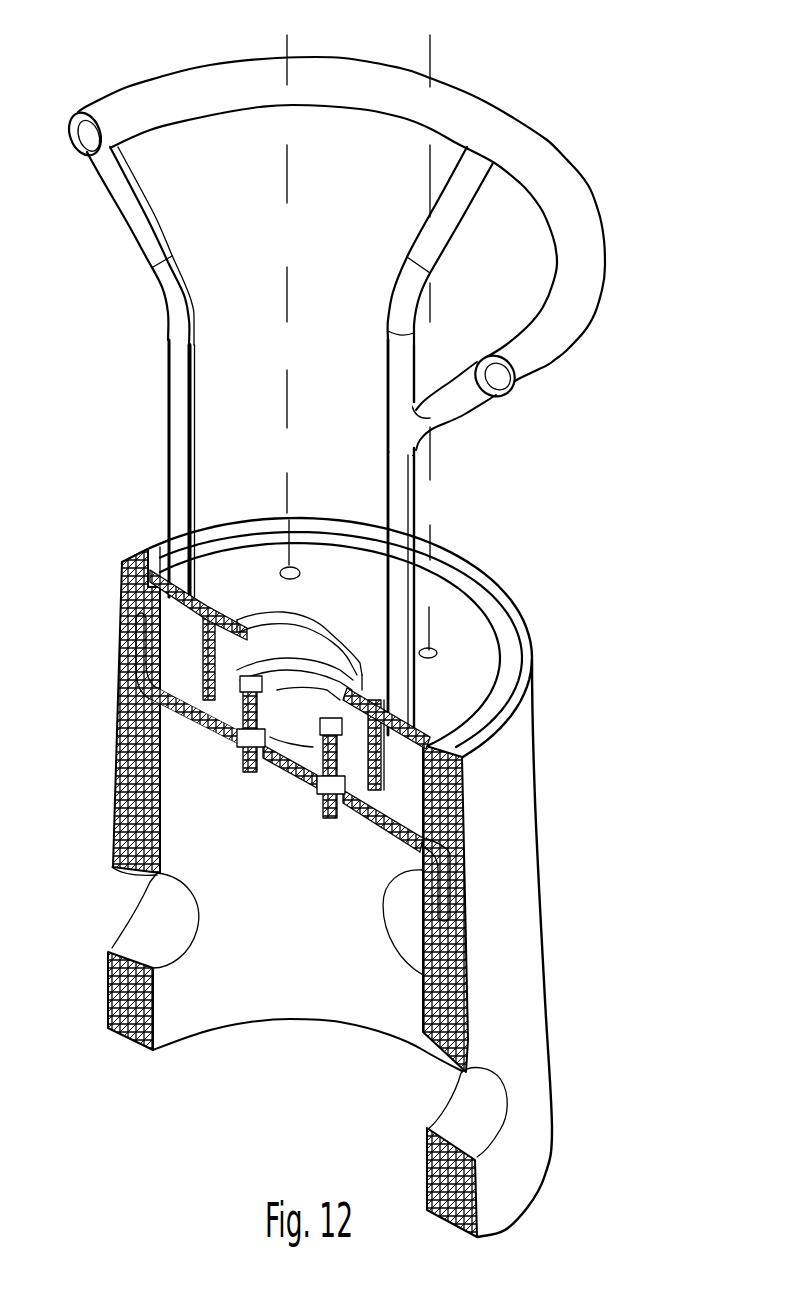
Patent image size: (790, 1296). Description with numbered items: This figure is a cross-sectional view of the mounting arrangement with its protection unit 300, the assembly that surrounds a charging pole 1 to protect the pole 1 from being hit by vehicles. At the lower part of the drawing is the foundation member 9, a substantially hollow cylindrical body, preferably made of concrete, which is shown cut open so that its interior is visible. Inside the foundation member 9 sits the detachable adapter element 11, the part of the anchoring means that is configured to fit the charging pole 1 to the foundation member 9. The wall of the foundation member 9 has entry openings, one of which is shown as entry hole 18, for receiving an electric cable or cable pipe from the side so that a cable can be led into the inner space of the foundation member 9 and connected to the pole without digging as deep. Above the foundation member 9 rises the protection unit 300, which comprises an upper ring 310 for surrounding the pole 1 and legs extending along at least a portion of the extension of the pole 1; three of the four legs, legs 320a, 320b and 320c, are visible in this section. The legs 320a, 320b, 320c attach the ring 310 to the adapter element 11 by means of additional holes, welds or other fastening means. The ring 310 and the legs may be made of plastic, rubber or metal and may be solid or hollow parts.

The charging pole 1 is at (433, 60).
The foundation member 9 is at (384, 877).
The adapter element 11 is at (370, 711).
The entry hole 18 is at (543, 1108).
The protection unit 300 is at (381, 396).
The upper ring 310 is at (376, 219).
The leg 320a is at (479, 533).
The leg 320b is at (545, 246).
The leg 320c is at (127, 352).